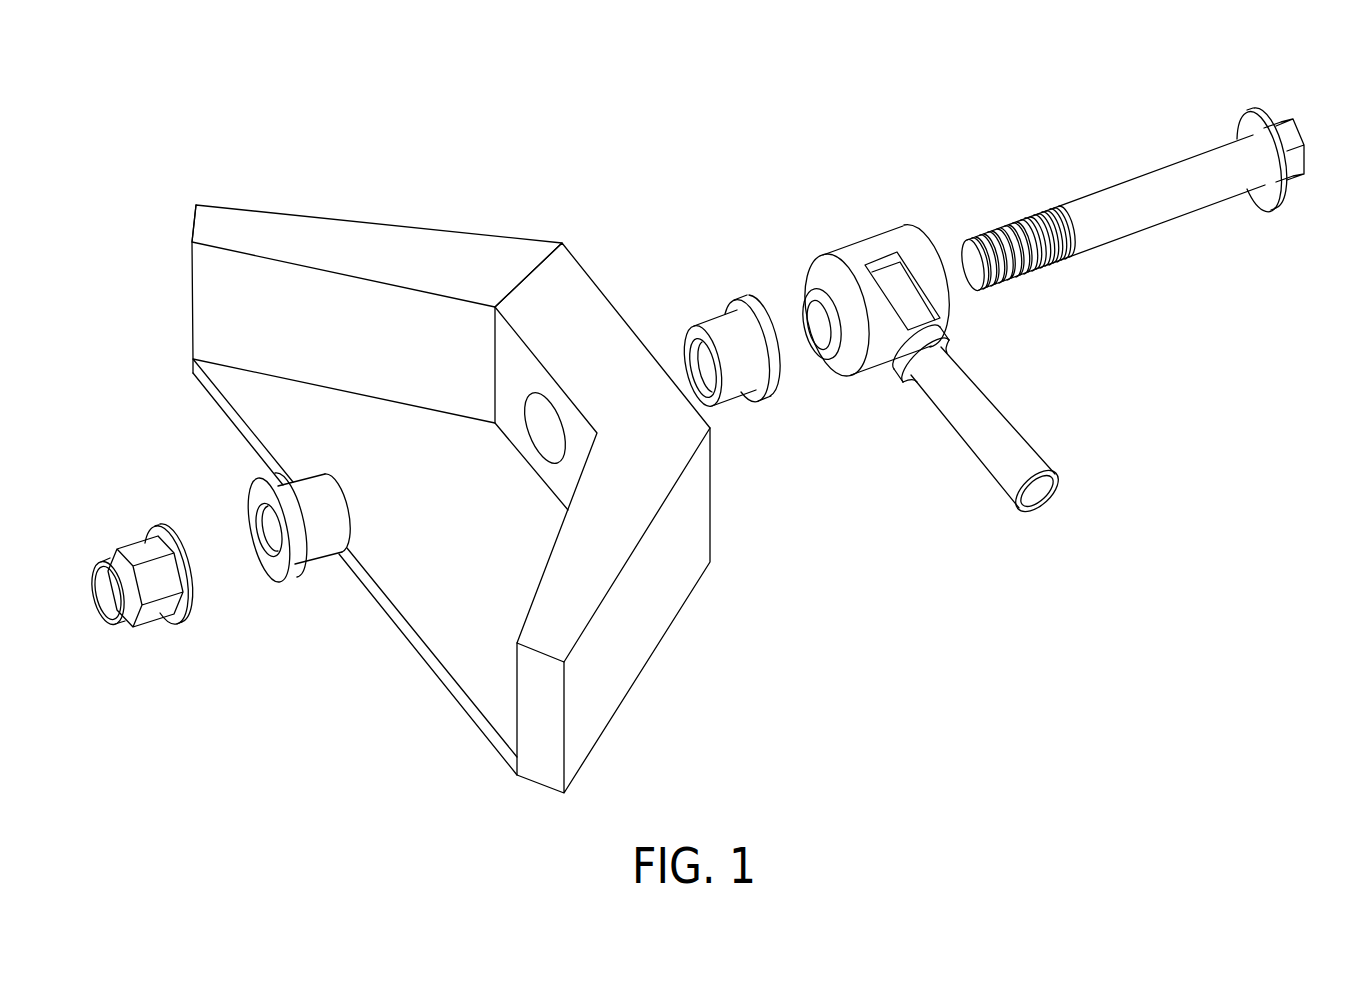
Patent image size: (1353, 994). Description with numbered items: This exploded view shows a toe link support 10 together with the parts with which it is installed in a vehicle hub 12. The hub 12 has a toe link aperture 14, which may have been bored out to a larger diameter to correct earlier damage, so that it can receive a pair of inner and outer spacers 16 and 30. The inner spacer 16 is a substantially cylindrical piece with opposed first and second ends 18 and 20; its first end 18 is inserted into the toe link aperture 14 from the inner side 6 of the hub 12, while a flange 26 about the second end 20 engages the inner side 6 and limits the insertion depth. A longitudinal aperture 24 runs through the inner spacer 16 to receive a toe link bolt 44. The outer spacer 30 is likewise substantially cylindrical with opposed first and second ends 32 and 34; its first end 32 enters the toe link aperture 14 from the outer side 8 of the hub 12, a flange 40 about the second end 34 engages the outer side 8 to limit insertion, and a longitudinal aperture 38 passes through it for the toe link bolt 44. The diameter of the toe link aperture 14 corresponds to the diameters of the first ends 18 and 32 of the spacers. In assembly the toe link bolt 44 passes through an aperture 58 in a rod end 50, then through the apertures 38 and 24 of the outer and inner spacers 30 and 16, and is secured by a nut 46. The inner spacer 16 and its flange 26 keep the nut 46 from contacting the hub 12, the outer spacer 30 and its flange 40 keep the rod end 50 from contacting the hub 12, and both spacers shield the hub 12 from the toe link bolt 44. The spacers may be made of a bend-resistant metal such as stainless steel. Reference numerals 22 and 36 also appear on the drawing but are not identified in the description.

The inner side 6 is at (565, 483).
The outer side 8 is at (636, 309).
The toe link support 10 is at (486, 122).
The hub 12 is at (495, 262).
The toe link aperture 14 is at (545, 430).
The inner spacer 16 is at (317, 553).
The first end 18 is at (350, 538).
The second end 20 is at (283, 565).
The bushing outer surface 22 is at (306, 488).
The longitudinal aperture 24 is at (268, 528).
The flange 26 is at (277, 490).
The outer spacer 30 is at (750, 383).
The first end 32 is at (718, 392).
The second end 34 is at (790, 377).
The bushing body 36 is at (717, 323).
The longitudinal aperture 38 is at (700, 368).
The flange 40 is at (745, 305).
The toe link bolt 44 is at (1165, 210).
The nut 46 is at (148, 617).
The rod end 50 is at (876, 250).
The aperture 58 is at (820, 330).